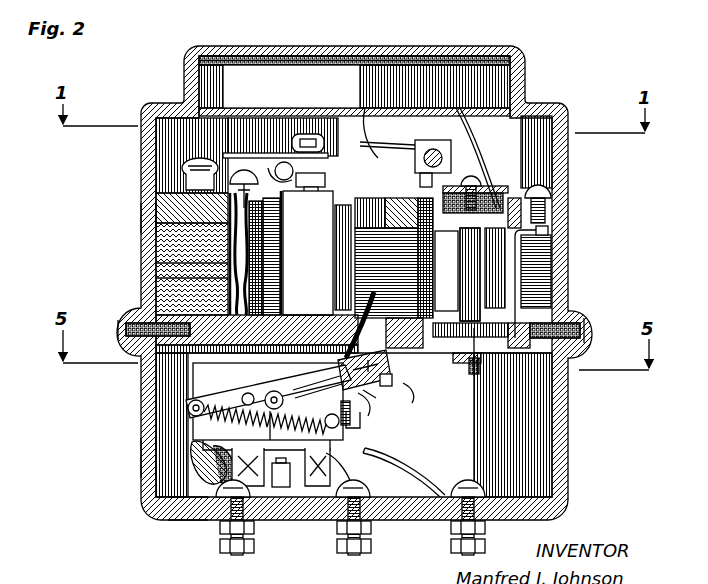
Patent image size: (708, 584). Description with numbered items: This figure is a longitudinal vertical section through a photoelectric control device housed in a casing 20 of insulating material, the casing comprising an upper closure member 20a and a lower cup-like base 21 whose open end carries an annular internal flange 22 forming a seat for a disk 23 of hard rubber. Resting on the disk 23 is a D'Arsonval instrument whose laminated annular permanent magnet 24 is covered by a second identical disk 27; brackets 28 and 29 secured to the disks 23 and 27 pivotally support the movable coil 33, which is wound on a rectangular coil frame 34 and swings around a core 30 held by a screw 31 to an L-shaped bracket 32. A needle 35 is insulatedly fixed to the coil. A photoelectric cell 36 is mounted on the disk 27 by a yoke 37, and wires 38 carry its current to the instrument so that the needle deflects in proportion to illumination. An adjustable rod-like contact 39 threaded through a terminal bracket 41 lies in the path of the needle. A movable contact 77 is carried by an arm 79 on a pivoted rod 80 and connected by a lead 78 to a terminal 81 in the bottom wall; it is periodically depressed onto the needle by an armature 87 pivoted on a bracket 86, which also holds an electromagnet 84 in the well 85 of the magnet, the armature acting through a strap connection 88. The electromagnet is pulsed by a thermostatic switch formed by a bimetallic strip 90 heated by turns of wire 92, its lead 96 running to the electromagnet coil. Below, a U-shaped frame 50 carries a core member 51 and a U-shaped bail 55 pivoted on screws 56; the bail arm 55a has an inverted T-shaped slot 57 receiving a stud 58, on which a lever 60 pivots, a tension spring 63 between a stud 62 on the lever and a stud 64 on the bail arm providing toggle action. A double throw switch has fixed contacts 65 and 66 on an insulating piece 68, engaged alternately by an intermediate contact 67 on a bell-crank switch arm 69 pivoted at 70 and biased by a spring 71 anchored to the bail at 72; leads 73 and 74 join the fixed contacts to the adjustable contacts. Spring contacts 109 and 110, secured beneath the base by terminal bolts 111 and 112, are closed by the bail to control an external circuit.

The casing 20 is at (128, 404).
The closure or upper member 20a is at (140, 192).
The lower cup-like base 21 is at (140, 446).
The annular internal flange 22 is at (140, 366).
The disk 23 is at (540, 312).
The permanent magnet 24 is at (535, 248).
The disk 27 is at (140, 207).
The bracket 28 is at (440, 353).
The bracket 29 is at (482, 170).
The core 30 is at (420, 305).
The screw 31 is at (515, 270).
The L-shaped bracket 32 is at (540, 224).
The coil 33 is at (462, 278).
The rectangular coil frame 34 is at (446, 228).
The needle 35 is at (396, 147).
The photoelectric cell 36 is at (442, 64).
The yoke 37 is at (358, 100).
The wires 38 is at (483, 133).
The contact 39 is at (268, 150).
The terminal bracket 41 is at (279, 157).
The U-shaped frame 50 is at (190, 420).
The core member 51 is at (342, 402).
The U-shaped bail 55 is at (352, 402).
The arm of the bail 55a is at (296, 318).
The pivot screws 56 is at (198, 393).
The inverted T-shaped slot 57 is at (262, 388).
The stud 58 is at (315, 387).
The lever 60 is at (352, 414).
The stud 62 is at (318, 416).
The tension spring 63 is at (232, 411).
The stud 64 is at (182, 399).
The contact 65 is at (258, 474).
The contact 66 is at (305, 470).
The intermediate contact 67 is at (280, 474).
The piece of insulating material 68 is at (185, 457).
The switch arm 69 is at (262, 417).
The pivot 70 is at (296, 373).
The spring 71 is at (366, 393).
The connection point on bail 72 is at (384, 379).
The lead 73 is at (178, 262).
The lead 74 is at (335, 506).
The movable contact 77 is at (292, 126).
The lead 78 is at (378, 354).
The arm 79 is at (365, 140).
The rod 80 is at (432, 145).
The terminal 81 is at (214, 528).
The electromagnet 84 is at (350, 195).
The well 85 is at (378, 197).
The bracket 86 is at (314, 253).
The armature 87 is at (302, 198).
The strap connection 88 is at (312, 124).
The bimetallic strip 90 is at (176, 156).
The wire 92 is at (178, 168).
The lead 96 is at (178, 242).
The spring contact 109 is at (388, 474).
The spring contact 110 is at (396, 458).
The terminal bolt 111 is at (362, 541).
The terminal bolt 112 is at (474, 526).